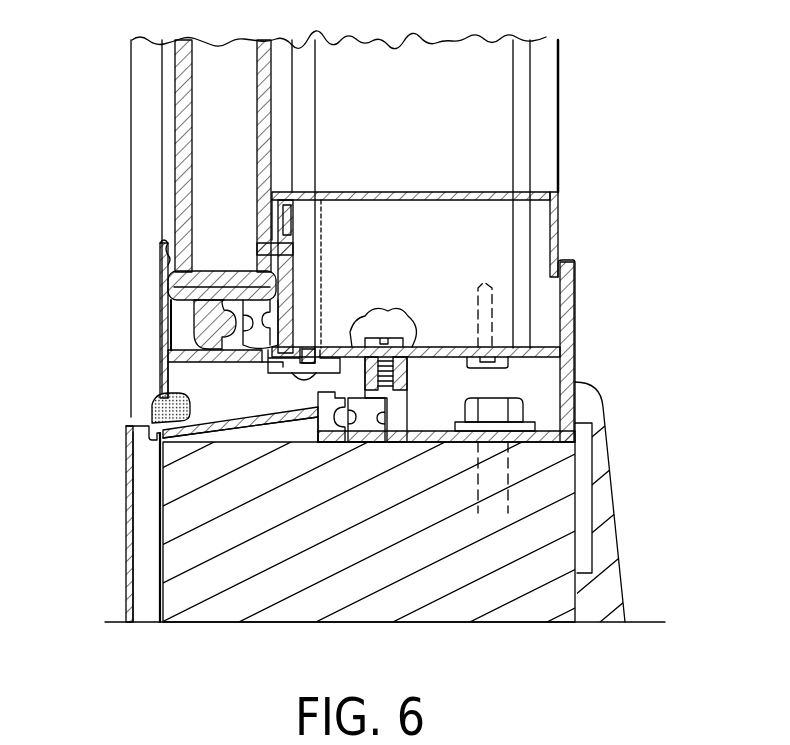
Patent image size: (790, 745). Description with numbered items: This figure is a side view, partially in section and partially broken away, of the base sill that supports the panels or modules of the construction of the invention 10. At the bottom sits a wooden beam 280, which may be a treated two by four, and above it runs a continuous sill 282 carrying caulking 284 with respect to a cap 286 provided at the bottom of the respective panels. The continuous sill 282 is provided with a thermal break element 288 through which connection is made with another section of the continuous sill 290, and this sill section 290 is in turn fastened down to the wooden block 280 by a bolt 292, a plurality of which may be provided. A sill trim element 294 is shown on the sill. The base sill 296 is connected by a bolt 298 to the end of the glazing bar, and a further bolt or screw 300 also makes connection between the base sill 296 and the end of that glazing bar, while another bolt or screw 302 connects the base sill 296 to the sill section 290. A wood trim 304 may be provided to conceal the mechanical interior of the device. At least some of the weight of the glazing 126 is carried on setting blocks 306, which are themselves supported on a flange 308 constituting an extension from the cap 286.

The window assembly 10 is at (420, 71).
The glazing 126 is at (214, 50).
The wooden beam 280 is at (210, 608).
The continuous sill 282 is at (128, 530).
The caulking 284 is at (158, 403).
The cap 286 is at (160, 300).
The thermal break element 288 is at (358, 421).
The continuous sill section 290 is at (437, 443).
The bolt 292 is at (470, 400).
The sill trim element 294 is at (390, 192).
The base sill 296 is at (447, 347).
The bolt 298 is at (297, 387).
The bolt or screw 300 is at (486, 282).
The bolt or screw 302 is at (385, 335).
The wood trim 304 is at (608, 493).
The setting blocks 306 is at (220, 272).
The flange 308 is at (178, 342).